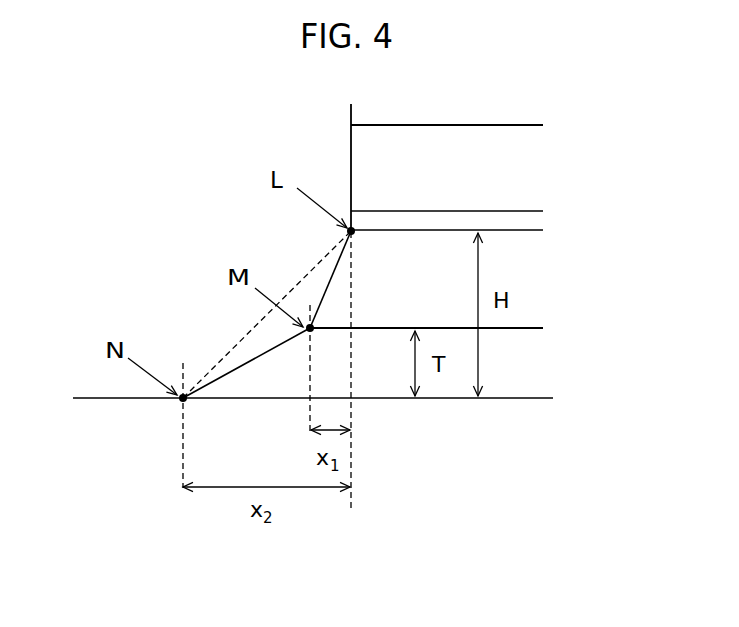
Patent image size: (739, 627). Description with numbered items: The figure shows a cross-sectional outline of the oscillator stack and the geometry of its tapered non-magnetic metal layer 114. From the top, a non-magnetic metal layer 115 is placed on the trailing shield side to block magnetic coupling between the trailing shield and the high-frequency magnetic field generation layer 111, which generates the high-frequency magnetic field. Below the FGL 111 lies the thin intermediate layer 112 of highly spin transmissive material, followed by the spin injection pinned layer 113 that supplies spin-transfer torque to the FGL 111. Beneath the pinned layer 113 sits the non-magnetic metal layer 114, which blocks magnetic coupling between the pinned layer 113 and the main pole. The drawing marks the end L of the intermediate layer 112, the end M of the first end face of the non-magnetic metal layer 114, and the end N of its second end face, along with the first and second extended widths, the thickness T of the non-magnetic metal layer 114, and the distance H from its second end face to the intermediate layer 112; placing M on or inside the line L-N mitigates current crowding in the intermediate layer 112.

The non-magnetic metal layer 115 is at (466, 113).
The high-frequency magnetic field generation layer 111 is at (466, 168).
The intermediate layer 112 is at (466, 218).
The spin injection pinned layer 113 is at (445, 296).
The non-magnetic metal layer 114 is at (327, 373).